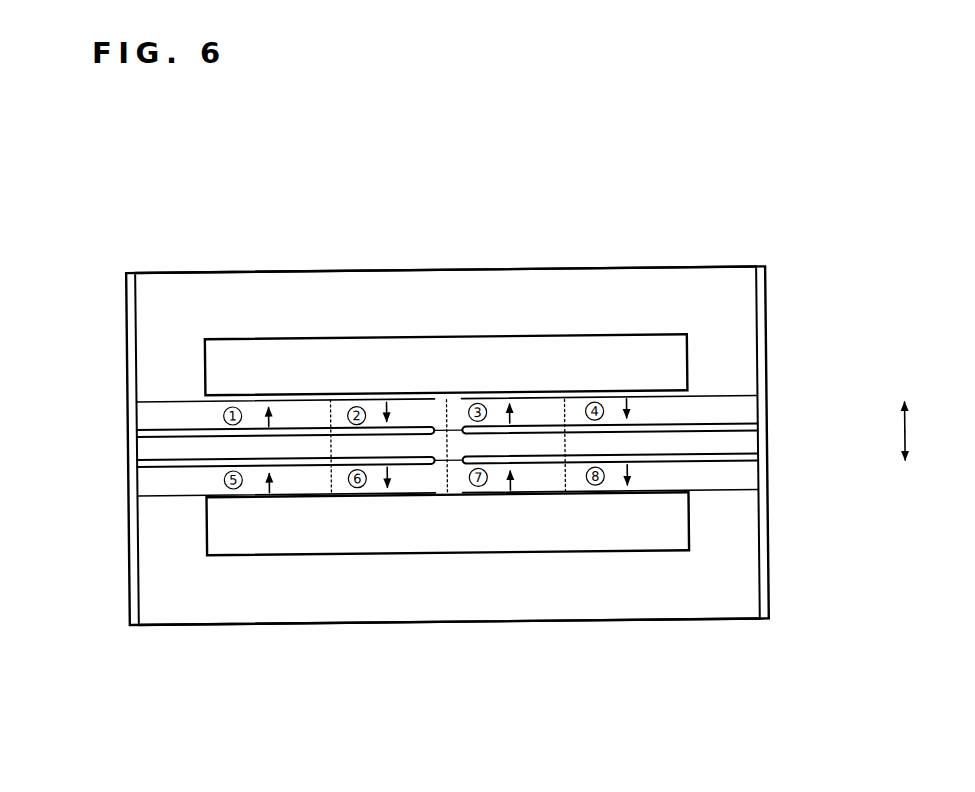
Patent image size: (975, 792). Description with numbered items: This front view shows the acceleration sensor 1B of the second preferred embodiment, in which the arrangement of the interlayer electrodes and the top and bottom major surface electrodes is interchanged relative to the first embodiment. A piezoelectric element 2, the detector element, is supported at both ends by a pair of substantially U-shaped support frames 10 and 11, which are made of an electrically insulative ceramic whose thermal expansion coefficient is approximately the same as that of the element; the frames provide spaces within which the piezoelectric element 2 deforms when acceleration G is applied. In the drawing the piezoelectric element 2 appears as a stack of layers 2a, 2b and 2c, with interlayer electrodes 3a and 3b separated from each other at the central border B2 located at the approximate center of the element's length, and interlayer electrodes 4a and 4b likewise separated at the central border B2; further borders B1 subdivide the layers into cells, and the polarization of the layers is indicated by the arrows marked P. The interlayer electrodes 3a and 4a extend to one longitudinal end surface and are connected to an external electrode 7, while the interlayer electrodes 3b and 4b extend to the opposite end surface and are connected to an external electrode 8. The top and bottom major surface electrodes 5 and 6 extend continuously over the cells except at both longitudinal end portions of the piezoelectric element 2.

The acceleration sensor 1B is at (565, 242).
The piezoelectric element 2 is at (58, 405).
The upper piezoelectric plate 2a is at (147, 419).
The middle piezoelectric layer 2b is at (147, 450).
The lower piezoelectric plate 2c is at (147, 484).
The interlayer electrode 3a is at (180, 430).
The interlayer electrode 3b is at (735, 431).
The interlayer electrode 4a is at (190, 469).
The interlayer electrode 4b is at (735, 471).
The top major surface electrode 5 is at (410, 398).
The bottom major surface electrode 6 is at (357, 502).
The external electrode 7 is at (128, 310).
The external electrode 8 is at (767, 300).
The support frame 10 is at (305, 287).
The support frame 11 is at (548, 616).
The boundary line B1 is at (566, 404).
The central border B2 is at (448, 403).
The polarization direction P is at (272, 411).
The acceleration G is at (883, 431).